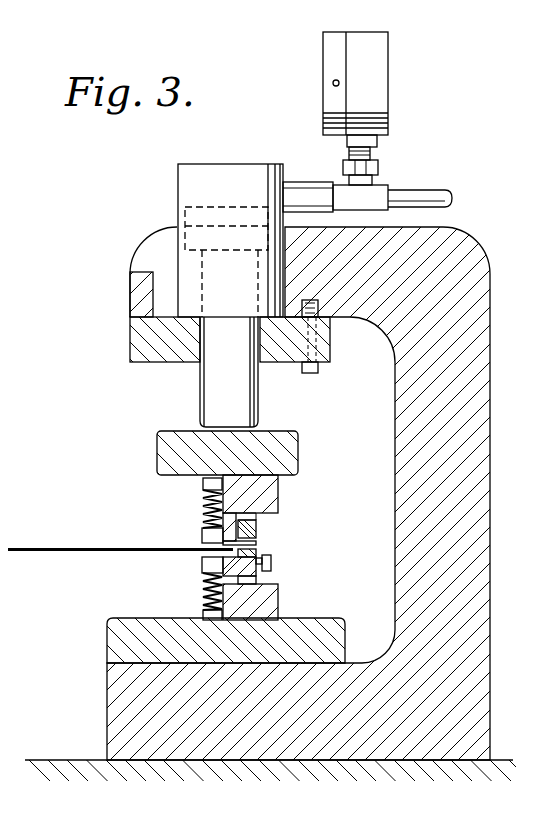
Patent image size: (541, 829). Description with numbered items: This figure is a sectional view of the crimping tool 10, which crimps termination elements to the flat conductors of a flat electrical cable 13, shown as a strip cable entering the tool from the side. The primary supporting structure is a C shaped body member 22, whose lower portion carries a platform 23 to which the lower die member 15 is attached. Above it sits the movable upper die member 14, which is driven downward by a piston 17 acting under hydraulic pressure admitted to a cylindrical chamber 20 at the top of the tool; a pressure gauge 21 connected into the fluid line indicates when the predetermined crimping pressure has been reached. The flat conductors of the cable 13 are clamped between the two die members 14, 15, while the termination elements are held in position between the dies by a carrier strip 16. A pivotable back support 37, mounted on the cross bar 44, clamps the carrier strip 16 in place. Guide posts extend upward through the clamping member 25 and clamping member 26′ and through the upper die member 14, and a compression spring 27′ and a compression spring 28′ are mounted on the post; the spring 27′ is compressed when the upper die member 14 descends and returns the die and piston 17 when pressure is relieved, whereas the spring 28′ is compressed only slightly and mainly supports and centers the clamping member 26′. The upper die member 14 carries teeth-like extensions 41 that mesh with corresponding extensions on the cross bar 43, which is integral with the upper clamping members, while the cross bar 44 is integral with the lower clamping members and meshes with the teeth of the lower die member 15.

The tool 10 is at (126, 252).
The flat electrical cable 13 is at (80, 546).
The upper die member 14 is at (278, 483).
The lower die member 15 is at (278, 598).
The carrier strip 16 is at (258, 551).
The piston 17 is at (209, 387).
The cylindrical chamber 20 is at (190, 189).
The pressure gauge 21 is at (328, 48).
The C shaped body member 22 is at (487, 353).
The platform 23 is at (115, 642).
The clamping member 25 is at (202, 537).
The clamping member 26′ is at (202, 565).
The compression spring 27′ is at (203, 497).
The compression spring 28′ is at (203, 600).
The pivotable back support 37 is at (271, 560).
The teeth-like extensions 41 is at (232, 527).
The cross bar 43 is at (256, 528).
The cross bar 44 is at (256, 572).